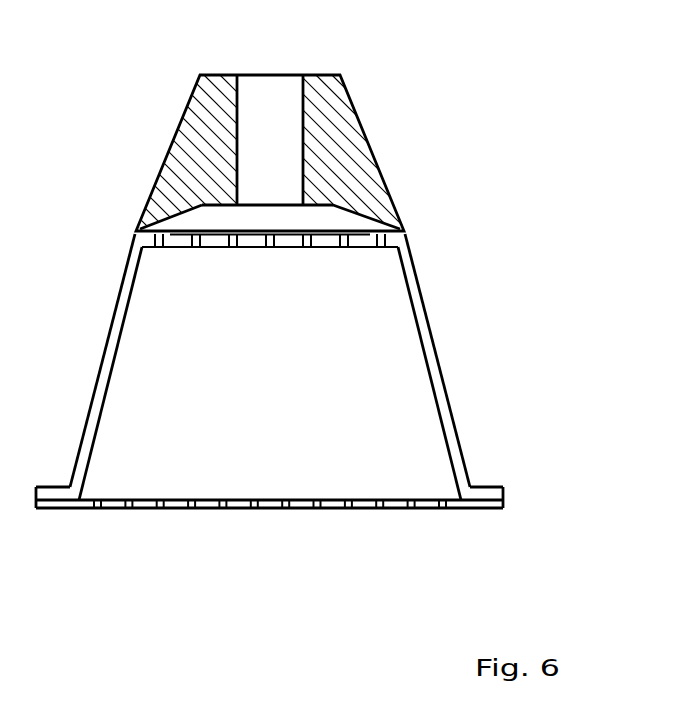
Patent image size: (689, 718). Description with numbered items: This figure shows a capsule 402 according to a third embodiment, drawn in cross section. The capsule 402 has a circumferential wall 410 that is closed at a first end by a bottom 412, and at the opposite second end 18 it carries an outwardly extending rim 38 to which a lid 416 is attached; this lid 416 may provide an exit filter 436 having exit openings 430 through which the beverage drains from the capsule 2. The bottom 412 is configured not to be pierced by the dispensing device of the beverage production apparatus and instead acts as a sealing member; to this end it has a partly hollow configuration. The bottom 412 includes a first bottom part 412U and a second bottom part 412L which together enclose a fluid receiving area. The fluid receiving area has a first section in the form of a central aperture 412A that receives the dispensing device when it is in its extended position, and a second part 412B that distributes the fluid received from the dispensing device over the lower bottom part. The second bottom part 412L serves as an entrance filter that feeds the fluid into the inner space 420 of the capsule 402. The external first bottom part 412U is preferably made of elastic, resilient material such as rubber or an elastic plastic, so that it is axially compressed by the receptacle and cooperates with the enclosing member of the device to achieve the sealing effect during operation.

The capsule 2 is at (531, 532).
The second end 18 is at (465, 485).
The outwardly extending rim 38 is at (495, 493).
The capsule 402 is at (94, 295).
The circumferential wall 410 is at (445, 407).
The bottom 412 is at (148, 137).
The central aperture 412A is at (270, 92).
The first bottom part 412U is at (347, 135).
The second part of the fluid receiving area 412B is at (302, 221).
The second bottom part 412L is at (327, 263).
The lid 416 is at (457, 508).
The inner space 420 is at (287, 392).
The exit openings 430 is at (181, 521).
The exit filter 436 is at (270, 523).